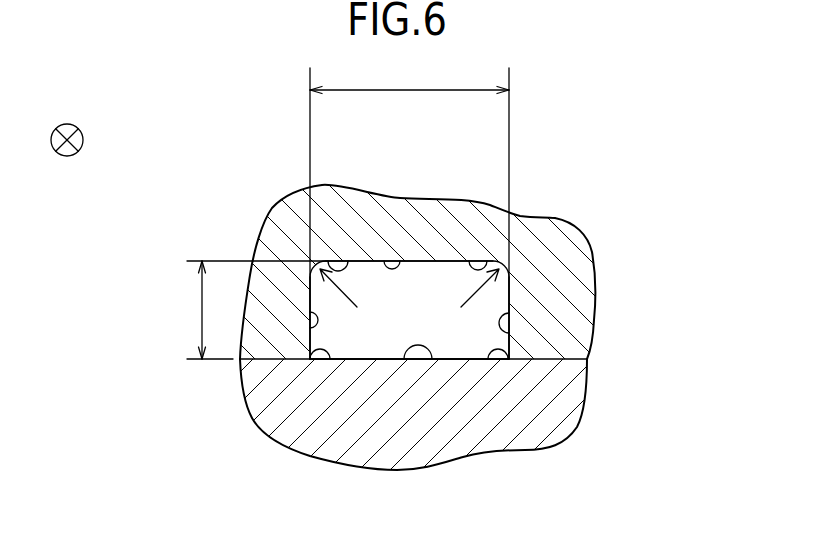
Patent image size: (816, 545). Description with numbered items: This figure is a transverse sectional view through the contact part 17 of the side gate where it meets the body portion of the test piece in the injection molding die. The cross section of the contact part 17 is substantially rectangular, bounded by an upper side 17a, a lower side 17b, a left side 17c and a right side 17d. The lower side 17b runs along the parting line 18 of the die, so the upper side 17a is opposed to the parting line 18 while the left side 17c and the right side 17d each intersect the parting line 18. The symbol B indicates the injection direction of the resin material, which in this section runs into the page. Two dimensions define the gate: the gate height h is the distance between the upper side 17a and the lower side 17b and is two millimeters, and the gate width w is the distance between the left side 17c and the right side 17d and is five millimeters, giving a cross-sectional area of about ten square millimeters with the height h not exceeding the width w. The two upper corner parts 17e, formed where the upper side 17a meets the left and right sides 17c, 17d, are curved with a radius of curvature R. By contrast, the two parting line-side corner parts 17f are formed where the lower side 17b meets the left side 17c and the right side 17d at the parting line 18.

The contact part 17 is at (371, 344).
The upper side 17a is at (403, 258).
The lower side 17b is at (430, 350).
The left side 17c is at (308, 341).
The right side 17d is at (505, 333).
The corner parts 17e is at (347, 258).
The parting line-side corner parts 17f is at (330, 362).
The parting line 18 is at (543, 365).
The injection direction B is at (81, 140).
The gate width w is at (409, 205).
The gate height h is at (252, 310).
The radius of curvature R is at (409, 301).